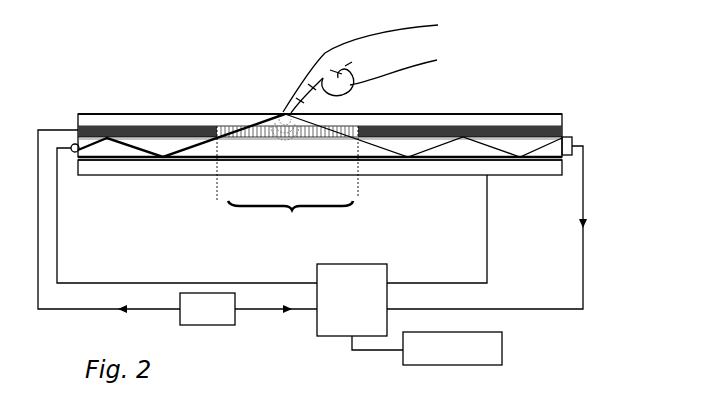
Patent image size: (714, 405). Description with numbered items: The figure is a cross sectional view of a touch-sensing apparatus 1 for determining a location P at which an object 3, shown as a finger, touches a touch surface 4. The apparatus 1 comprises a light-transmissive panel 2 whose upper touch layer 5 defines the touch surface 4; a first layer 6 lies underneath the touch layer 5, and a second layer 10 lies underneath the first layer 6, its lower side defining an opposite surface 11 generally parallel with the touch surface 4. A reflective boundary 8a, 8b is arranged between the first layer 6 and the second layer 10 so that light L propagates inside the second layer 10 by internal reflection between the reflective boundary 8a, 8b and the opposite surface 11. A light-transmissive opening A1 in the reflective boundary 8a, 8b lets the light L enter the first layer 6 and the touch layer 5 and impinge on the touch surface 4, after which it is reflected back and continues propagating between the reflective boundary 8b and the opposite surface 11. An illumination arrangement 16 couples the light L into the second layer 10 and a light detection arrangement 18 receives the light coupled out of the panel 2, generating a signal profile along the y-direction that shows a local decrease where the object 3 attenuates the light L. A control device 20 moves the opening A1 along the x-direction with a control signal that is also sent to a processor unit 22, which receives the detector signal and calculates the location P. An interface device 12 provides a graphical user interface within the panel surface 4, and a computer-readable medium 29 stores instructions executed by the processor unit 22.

The touch-sensing apparatus 1 is at (99, 64).
The light-transmissive panel 2 is at (426, 101).
The object 3 is at (325, 53).
The touch surface 4 is at (121, 106).
The touch layer 5 is at (105, 122).
The first layer 6 is at (63, 121).
The reflective boundary 8a is at (188, 125).
The reflective boundary 8b is at (536, 114).
The second layer 10 is at (203, 156).
The opposite surface 11 is at (114, 168).
The interface device 12 is at (173, 169).
The illumination arrangement 16 is at (74, 153).
The light detection arrangement 18 is at (570, 136).
The control device 20 is at (248, 313).
The processor unit 22 is at (402, 255).
The computer-readable medium 29 is at (427, 348).
The location P is at (279, 108).
The light L is at (437, 158).
The light-transmissive opening A1 is at (287, 178).